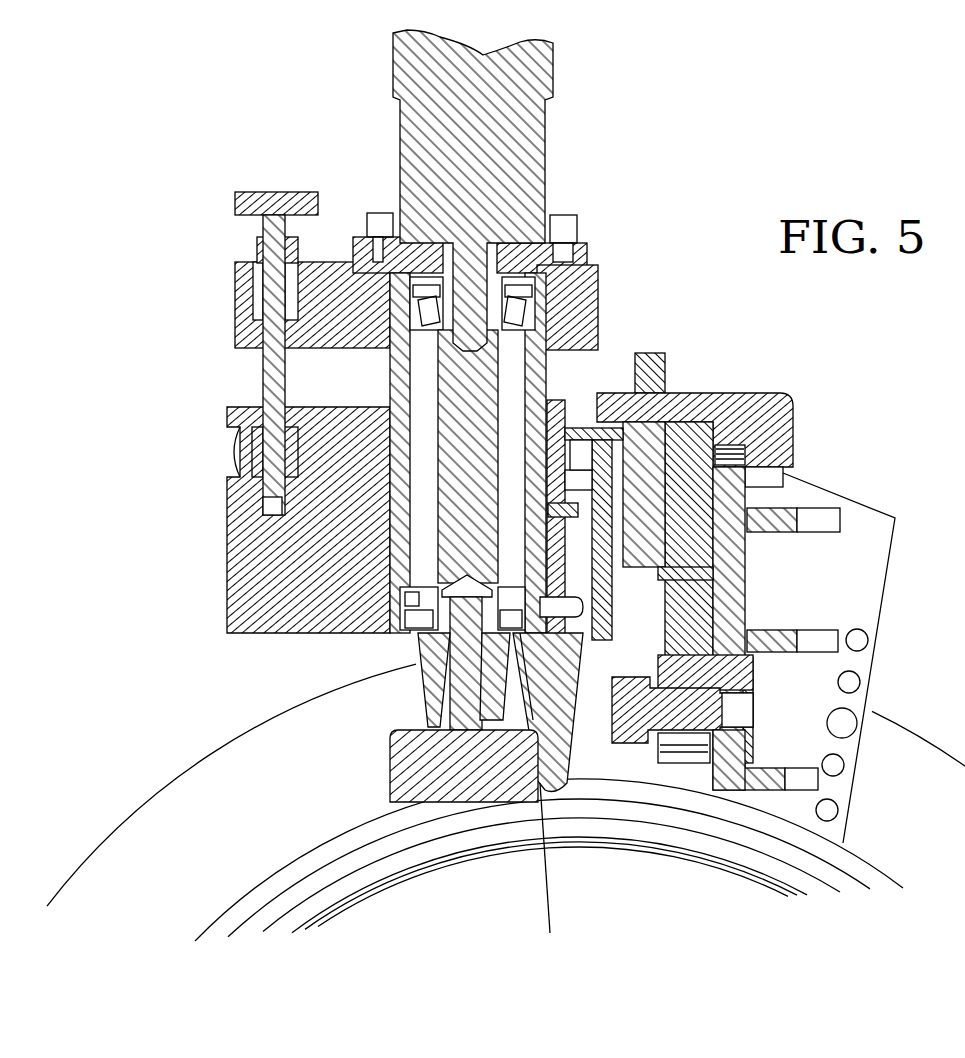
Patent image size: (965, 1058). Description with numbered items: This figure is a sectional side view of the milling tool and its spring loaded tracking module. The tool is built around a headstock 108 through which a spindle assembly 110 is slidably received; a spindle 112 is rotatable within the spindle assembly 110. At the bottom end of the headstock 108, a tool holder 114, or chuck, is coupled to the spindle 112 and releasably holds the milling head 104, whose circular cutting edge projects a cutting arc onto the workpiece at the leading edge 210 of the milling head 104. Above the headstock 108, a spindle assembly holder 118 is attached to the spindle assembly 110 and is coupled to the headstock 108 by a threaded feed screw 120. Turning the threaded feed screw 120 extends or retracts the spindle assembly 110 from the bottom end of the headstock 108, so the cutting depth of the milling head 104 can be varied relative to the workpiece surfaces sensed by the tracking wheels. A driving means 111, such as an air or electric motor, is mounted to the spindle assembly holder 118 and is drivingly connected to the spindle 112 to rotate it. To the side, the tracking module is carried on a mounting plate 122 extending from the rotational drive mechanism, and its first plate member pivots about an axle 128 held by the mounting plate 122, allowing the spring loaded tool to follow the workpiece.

The milling head 104 is at (390, 757).
The headstock 108 is at (226, 532).
The spindle assembly 110 is at (548, 372).
The driving means 111 is at (553, 137).
The spindle 112 is at (442, 387).
The tool holder 114 is at (420, 650).
The spindle assembly holder 118 is at (240, 290).
The threaded feed screw 120 is at (262, 378).
The mounting plate 122 is at (745, 580).
The axle 128 is at (693, 705).
The leading edge 210 is at (542, 790).